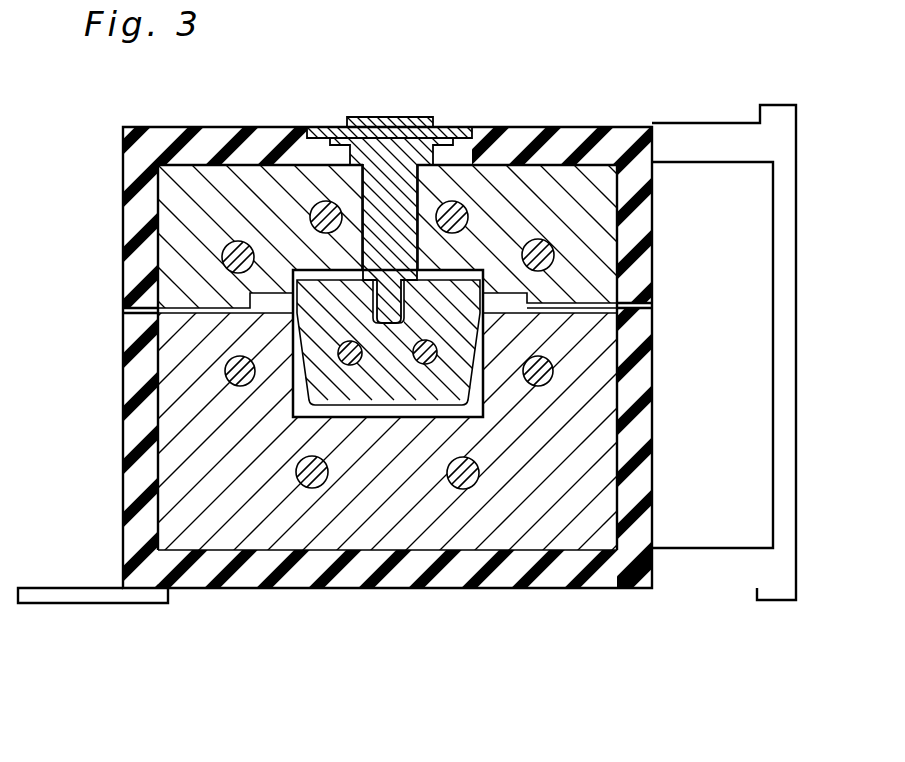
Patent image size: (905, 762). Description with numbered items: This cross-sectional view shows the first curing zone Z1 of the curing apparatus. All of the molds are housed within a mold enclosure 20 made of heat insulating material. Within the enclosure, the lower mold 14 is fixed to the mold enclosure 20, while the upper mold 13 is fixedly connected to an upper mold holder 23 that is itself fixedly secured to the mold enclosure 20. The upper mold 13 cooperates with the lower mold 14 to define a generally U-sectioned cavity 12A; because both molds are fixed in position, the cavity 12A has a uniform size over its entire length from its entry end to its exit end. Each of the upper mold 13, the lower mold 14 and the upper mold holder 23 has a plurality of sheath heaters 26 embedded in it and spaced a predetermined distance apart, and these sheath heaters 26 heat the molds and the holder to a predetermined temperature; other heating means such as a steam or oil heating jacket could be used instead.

The mold enclosure 20 is at (137, 155).
The upper mold holder 23 is at (230, 218).
The sheath heaters 26 is at (223, 263).
The upper mold 13 is at (453, 297).
The cavity 12A is at (363, 413).
The lower mold 14 is at (477, 523).
The first curing zone Z1 is at (388, 94).